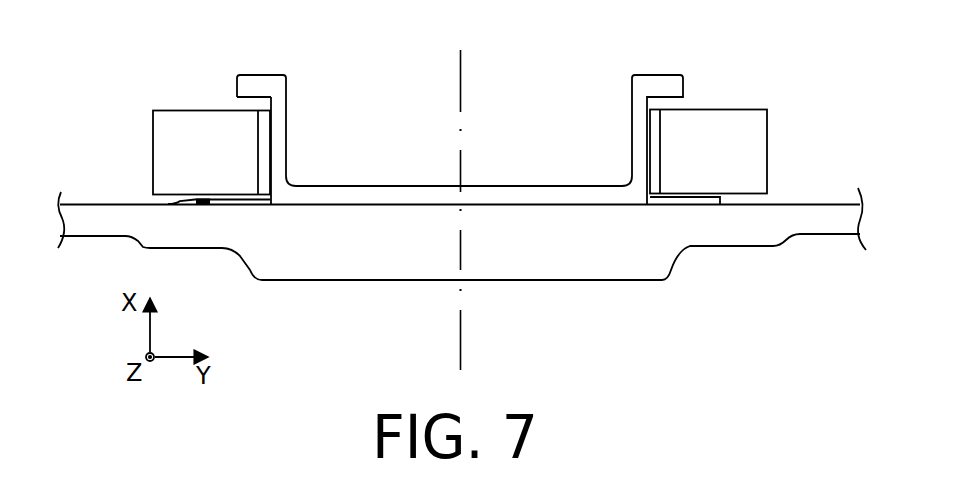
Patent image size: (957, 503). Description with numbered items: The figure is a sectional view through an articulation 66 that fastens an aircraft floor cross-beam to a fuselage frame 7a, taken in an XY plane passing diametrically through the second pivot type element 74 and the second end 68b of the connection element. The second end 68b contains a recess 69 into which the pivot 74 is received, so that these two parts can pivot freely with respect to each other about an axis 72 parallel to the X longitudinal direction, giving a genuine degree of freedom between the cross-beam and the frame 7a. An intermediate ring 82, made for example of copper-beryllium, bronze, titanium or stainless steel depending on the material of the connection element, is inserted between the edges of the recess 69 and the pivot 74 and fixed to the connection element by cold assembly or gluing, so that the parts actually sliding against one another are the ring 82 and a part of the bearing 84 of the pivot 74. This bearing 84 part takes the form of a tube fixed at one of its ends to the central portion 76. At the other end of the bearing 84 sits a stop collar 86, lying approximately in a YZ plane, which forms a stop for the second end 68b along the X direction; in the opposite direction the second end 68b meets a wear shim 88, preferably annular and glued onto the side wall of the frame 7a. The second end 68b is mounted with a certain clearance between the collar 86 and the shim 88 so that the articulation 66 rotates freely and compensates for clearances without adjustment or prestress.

The fuselage frame 7a is at (300, 263).
The articulation 66 is at (420, 108).
The second end of the connection element 68b is at (150, 115).
The recess 69 is at (262, 148).
The axis 72 is at (459, 325).
The second pivot type element 74 is at (292, 150).
The central portion 76 is at (495, 198).
The intermediate ring 82 is at (267, 125).
The bearing 84 is at (641, 116).
The stop collar 86 is at (235, 92).
The wear shim 88 is at (170, 203).